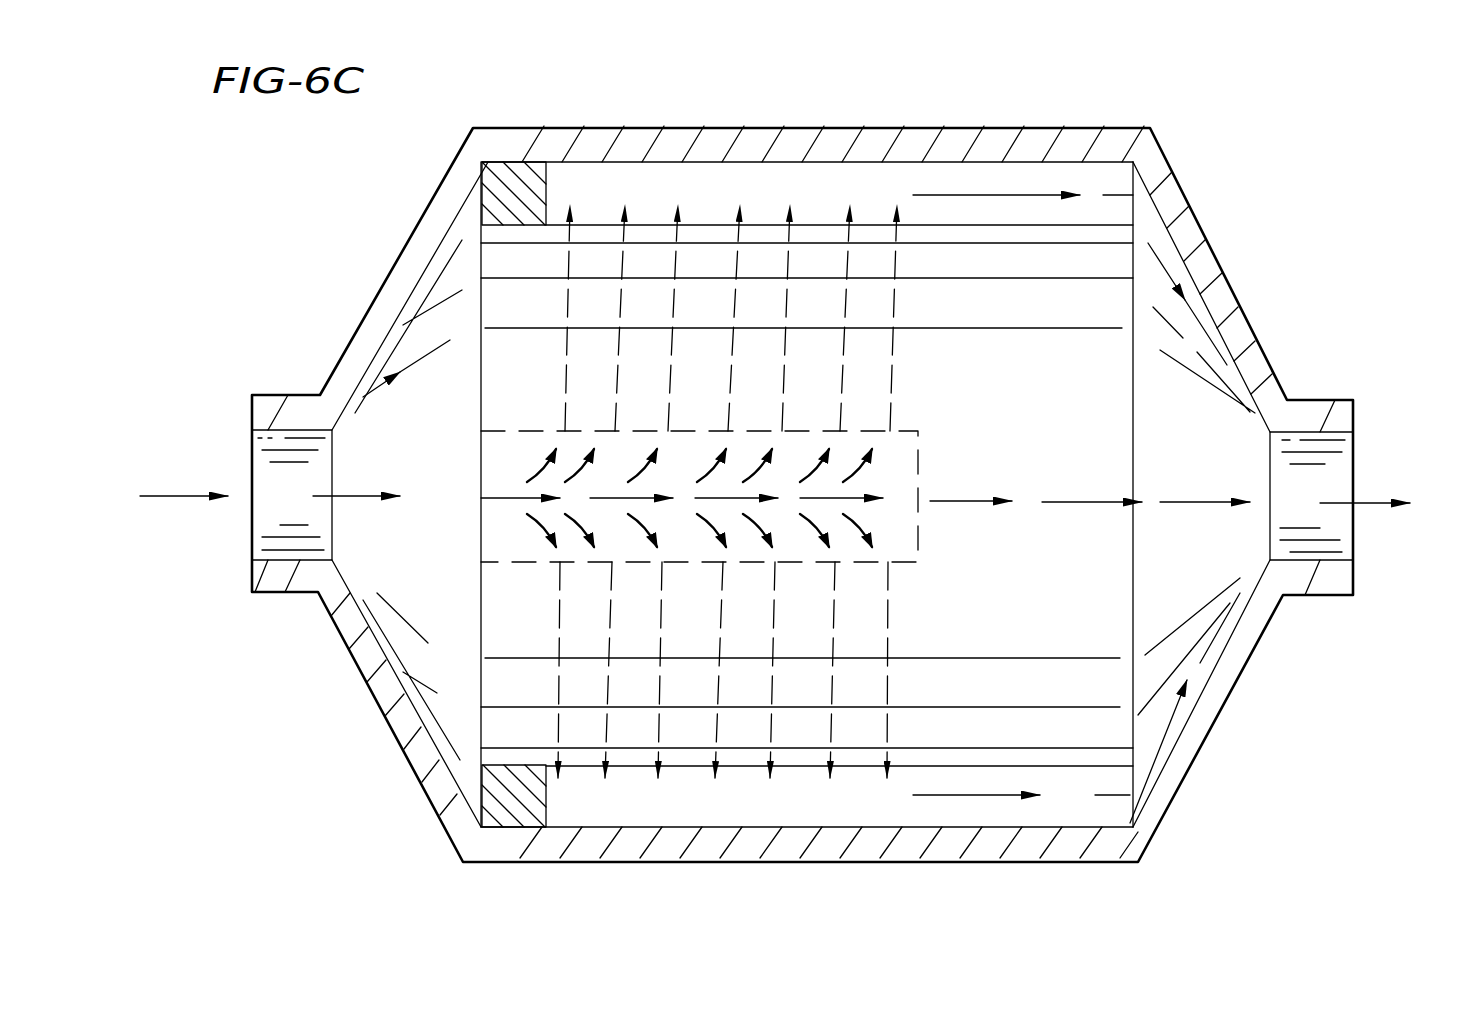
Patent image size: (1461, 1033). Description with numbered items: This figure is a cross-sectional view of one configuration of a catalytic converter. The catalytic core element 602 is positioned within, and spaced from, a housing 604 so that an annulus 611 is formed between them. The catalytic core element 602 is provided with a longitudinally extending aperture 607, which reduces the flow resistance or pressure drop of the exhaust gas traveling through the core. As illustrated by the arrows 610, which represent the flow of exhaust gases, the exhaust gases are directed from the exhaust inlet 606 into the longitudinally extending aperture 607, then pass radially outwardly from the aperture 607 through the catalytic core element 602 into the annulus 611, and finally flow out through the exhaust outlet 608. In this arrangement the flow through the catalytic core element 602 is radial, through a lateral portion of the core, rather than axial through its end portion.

The catalytic core element 602 is at (1105, 222).
The housing 604 is at (878, 124).
The exhaust inlet 606 is at (244, 540).
The longitudinally extending aperture 607 is at (478, 420).
The exhaust outlet 608 is at (1360, 468).
The arrows representing the flow of exhaust gases 610 is at (172, 496).
The annulus 611 is at (567, 190).